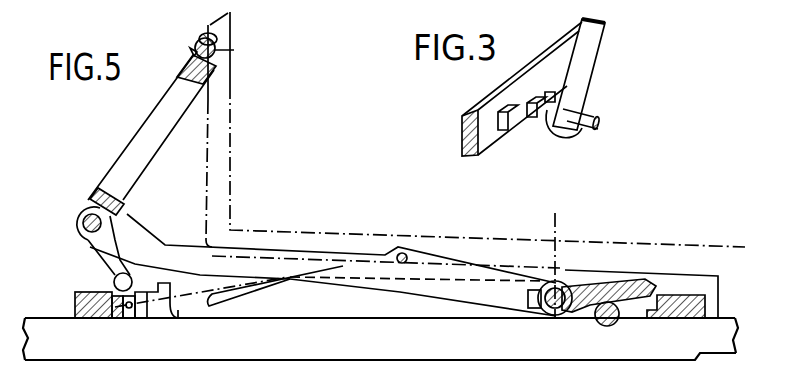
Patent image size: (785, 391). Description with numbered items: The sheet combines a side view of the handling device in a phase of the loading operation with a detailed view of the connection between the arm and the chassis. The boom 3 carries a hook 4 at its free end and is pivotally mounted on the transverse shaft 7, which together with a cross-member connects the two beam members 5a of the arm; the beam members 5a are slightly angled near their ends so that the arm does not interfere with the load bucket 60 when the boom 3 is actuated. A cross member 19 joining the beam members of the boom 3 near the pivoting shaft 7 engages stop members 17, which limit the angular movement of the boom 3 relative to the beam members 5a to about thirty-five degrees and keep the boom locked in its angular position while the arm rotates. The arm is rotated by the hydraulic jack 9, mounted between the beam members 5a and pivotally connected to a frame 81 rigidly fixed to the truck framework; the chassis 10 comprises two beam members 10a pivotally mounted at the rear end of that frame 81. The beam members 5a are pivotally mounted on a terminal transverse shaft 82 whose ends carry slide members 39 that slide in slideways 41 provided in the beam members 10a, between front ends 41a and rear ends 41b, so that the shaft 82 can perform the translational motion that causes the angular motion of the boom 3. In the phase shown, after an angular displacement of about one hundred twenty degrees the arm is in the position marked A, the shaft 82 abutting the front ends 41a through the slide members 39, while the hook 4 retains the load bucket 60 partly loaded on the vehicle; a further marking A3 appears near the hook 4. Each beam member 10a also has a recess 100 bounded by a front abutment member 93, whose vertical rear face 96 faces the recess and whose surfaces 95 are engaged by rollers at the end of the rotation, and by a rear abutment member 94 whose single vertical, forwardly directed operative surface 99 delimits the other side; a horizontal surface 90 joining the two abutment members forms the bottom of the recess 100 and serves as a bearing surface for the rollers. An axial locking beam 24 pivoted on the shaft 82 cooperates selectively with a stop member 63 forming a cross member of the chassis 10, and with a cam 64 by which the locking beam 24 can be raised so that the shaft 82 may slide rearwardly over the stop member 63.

In FIG. 5, the boom 3 is at (157, 113).
In FIG. 5, the hook 4 is at (190, 50).
In FIG. 5, the section axis A3 is at (238, 56).
In FIG. 5, the load bucket 60 is at (250, 133).
In FIG. 5, the cross member 19 is at (100, 190).
In FIG. 5, the transverse shaft 7 is at (83, 223).
In FIG. 5, the stop members 17 is at (125, 222).
In FIG. 5, the surfaces of front stop members 95 is at (112, 290).
In FIG. 5, the hydraulic jack 9 is at (343, 267).
In FIG. 5, the chassis 10 is at (305, 298).
In FIG. 5, the frame 81 is at (83, 303).
In FIG. 5, the horizontal surface 90 is at (125, 304).
In FIG. 5, the front abutment member 93 is at (117, 316).
In FIG. 5, the vertical rear face 96 is at (128, 307).
In FIG. 5, the rear abutment member 94 is at (168, 297).
In FIG. 5, the recess 100 is at (147, 305).
In FIG. 5, the operative surface 99 is at (177, 300).
In FIG. 5, the abutting position A is at (550, 255).
In FIG. 5, the axial locking beam 24 is at (626, 283).
In FIG. 5, the cam 64 is at (613, 327).
In FIG. 5, the stop member 63 is at (668, 305).
In FIG. 3, the beam members of chassis 10a is at (492, 107).
In FIG. 3, the beam members of arm 5a is at (600, 37).
In FIG. 3, the slide members 39 is at (547, 127).
In FIG. 3, the terminal transverse shaft 82 is at (600, 123).
In FIG. 3, the front ends of slideways 41a is at (497, 130).
In FIG. 3, the slideways 41 is at (531, 123).
In FIG. 3, the rear ends of slideways 41b is at (553, 90).